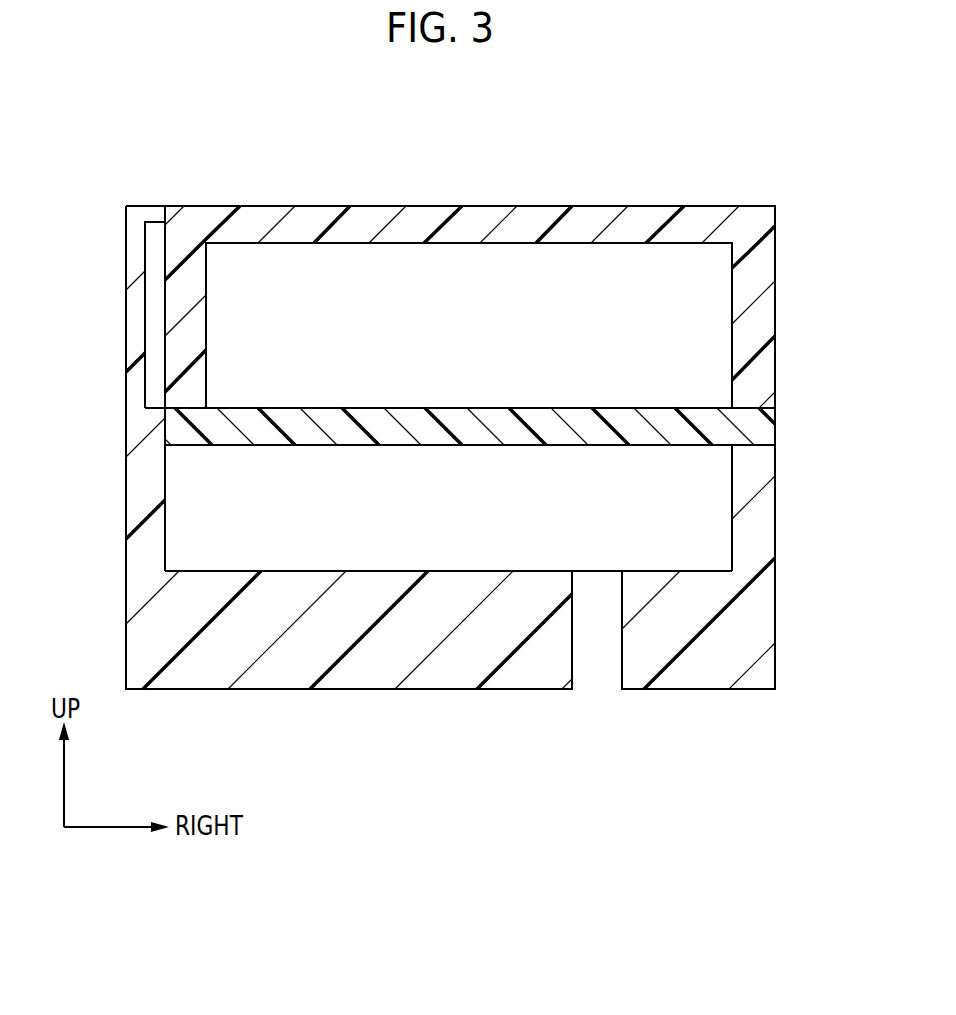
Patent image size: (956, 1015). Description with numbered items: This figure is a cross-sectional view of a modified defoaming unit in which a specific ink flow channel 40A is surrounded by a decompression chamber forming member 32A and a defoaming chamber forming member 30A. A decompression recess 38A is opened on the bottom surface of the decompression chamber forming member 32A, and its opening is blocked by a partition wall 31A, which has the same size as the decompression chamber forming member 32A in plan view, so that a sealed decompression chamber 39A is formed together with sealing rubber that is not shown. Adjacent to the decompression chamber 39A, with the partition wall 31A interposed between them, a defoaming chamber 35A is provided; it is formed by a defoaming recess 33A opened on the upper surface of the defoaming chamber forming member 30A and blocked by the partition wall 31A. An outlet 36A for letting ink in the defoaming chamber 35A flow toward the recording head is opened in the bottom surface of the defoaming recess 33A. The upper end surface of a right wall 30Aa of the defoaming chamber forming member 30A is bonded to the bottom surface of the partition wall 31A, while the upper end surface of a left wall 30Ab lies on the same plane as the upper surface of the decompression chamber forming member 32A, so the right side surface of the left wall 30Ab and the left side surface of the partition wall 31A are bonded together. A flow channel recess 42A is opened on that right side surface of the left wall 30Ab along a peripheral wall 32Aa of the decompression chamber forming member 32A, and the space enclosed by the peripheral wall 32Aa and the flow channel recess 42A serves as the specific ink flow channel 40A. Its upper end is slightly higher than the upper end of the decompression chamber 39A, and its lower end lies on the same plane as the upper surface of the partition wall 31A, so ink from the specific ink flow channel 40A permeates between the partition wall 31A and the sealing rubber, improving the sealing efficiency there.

The defoaming chamber forming member 30A is at (767, 546).
The right wall 30Aa is at (767, 470).
The left wall 30Ab is at (137, 487).
The partition wall 31A is at (767, 437).
The decompression chamber forming member 32A is at (767, 310).
The peripheral wall 32Aa is at (173, 308).
The defoaming recess 33A is at (297, 572).
The defoaming chamber 35A is at (380, 558).
The outlet 36A is at (622, 657).
The decompression recess 38A is at (377, 243).
The decompression chamber 39A is at (515, 254).
The specific ink flow channel 40A is at (153, 228).
The flow channel recess 42A is at (144, 280).